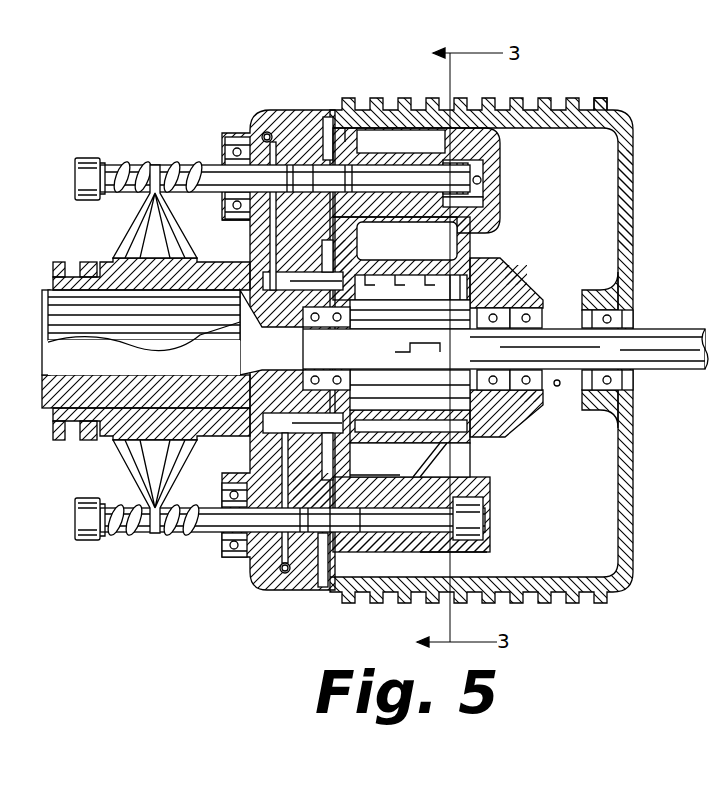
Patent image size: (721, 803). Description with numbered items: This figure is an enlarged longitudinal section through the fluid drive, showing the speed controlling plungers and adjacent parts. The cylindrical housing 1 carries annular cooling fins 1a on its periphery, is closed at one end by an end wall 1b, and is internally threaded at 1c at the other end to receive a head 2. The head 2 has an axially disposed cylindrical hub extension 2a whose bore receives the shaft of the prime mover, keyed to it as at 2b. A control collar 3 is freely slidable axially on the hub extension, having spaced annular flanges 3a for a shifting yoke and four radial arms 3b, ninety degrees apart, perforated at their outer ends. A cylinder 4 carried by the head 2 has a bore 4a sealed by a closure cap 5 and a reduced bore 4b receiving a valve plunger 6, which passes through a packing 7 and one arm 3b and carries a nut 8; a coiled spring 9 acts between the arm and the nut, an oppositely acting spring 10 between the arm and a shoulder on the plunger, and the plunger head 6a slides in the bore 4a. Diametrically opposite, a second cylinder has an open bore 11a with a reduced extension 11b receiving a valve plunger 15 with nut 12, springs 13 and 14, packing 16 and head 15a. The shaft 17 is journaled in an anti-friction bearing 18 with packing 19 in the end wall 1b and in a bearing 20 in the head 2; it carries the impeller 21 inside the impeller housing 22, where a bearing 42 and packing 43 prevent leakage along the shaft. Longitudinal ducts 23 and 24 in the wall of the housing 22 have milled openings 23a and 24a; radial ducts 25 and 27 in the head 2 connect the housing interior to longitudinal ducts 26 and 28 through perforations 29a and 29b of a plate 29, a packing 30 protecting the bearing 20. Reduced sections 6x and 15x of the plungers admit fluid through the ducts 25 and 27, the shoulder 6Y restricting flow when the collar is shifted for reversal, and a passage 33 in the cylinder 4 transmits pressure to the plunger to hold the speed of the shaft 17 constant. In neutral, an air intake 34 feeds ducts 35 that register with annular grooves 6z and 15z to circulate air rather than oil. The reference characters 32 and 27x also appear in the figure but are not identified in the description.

The cylindrical housing 1 is at (525, 110).
The annular fins 1a is at (597, 100).
The closed end wall 1b is at (630, 185).
The internal threads 1c is at (328, 118).
The head 2 is at (290, 112).
The cylindrical hub extension 2a is at (62, 322).
The keyed connection 2b is at (125, 372).
The control collar 3 is at (235, 265).
The annular flanges 3a is at (60, 262).
The radially disposed arms 3b is at (130, 242).
The cylinder 4 is at (430, 163).
The bore 4a is at (445, 147).
The reduced bore 4b is at (414, 165).
The closure cap 5 is at (500, 178).
The valve plunger 6 is at (230, 160).
The plunger head 6a is at (487, 170).
The reduced section 6x is at (347, 130).
The shoulder 6Y is at (390, 165).
The annular groove 6z is at (268, 132).
The packing 7 is at (235, 140).
The nut 8 is at (80, 160).
The coiled spring 9 is at (130, 165).
The oppositely acting spring 10 is at (180, 165).
The open bore 11a is at (455, 500).
The reduced bore extension 11b is at (395, 540).
The nut 12 is at (80, 518).
The spring 13 is at (125, 535).
The oppositely acting spring 14 is at (155, 540).
The valve plunger 15 is at (240, 478).
The plunger head 15a is at (485, 518).
The reduced section 15x is at (325, 572).
The annular groove 15z is at (287, 574).
The packing 16 is at (215, 540).
The shaft 17 is at (650, 340).
The anti-friction bearing 18 is at (600, 292).
The packing 19 is at (612, 320).
The anti-friction bearing 20 is at (245, 312).
The impeller 21 is at (495, 275).
The impeller housing 22 is at (407, 243).
The longitudinal duct 23 is at (435, 298).
The milled opening 23a is at (411, 263).
The longitudinal duct 24 is at (475, 415).
The milled opening 24a is at (410, 458).
The radial duct 25 is at (237, 222).
The longitudinal duct 26 is at (265, 280).
The radial duct 27 is at (315, 485).
The passage 27x is at (437, 552).
The longitudinal duct 28 is at (290, 418).
The plate 29 is at (317, 422).
The perforation 29a is at (316, 281).
The perforation 29b is at (375, 466).
The packing 30 is at (305, 378).
The hub 32 is at (520, 290).
The passage 33 is at (487, 212).
The air intake 34 is at (559, 386).
The air ducts 35 is at (264, 134).
The anti-friction bearing 42 is at (530, 318).
The packing 43 is at (530, 400).